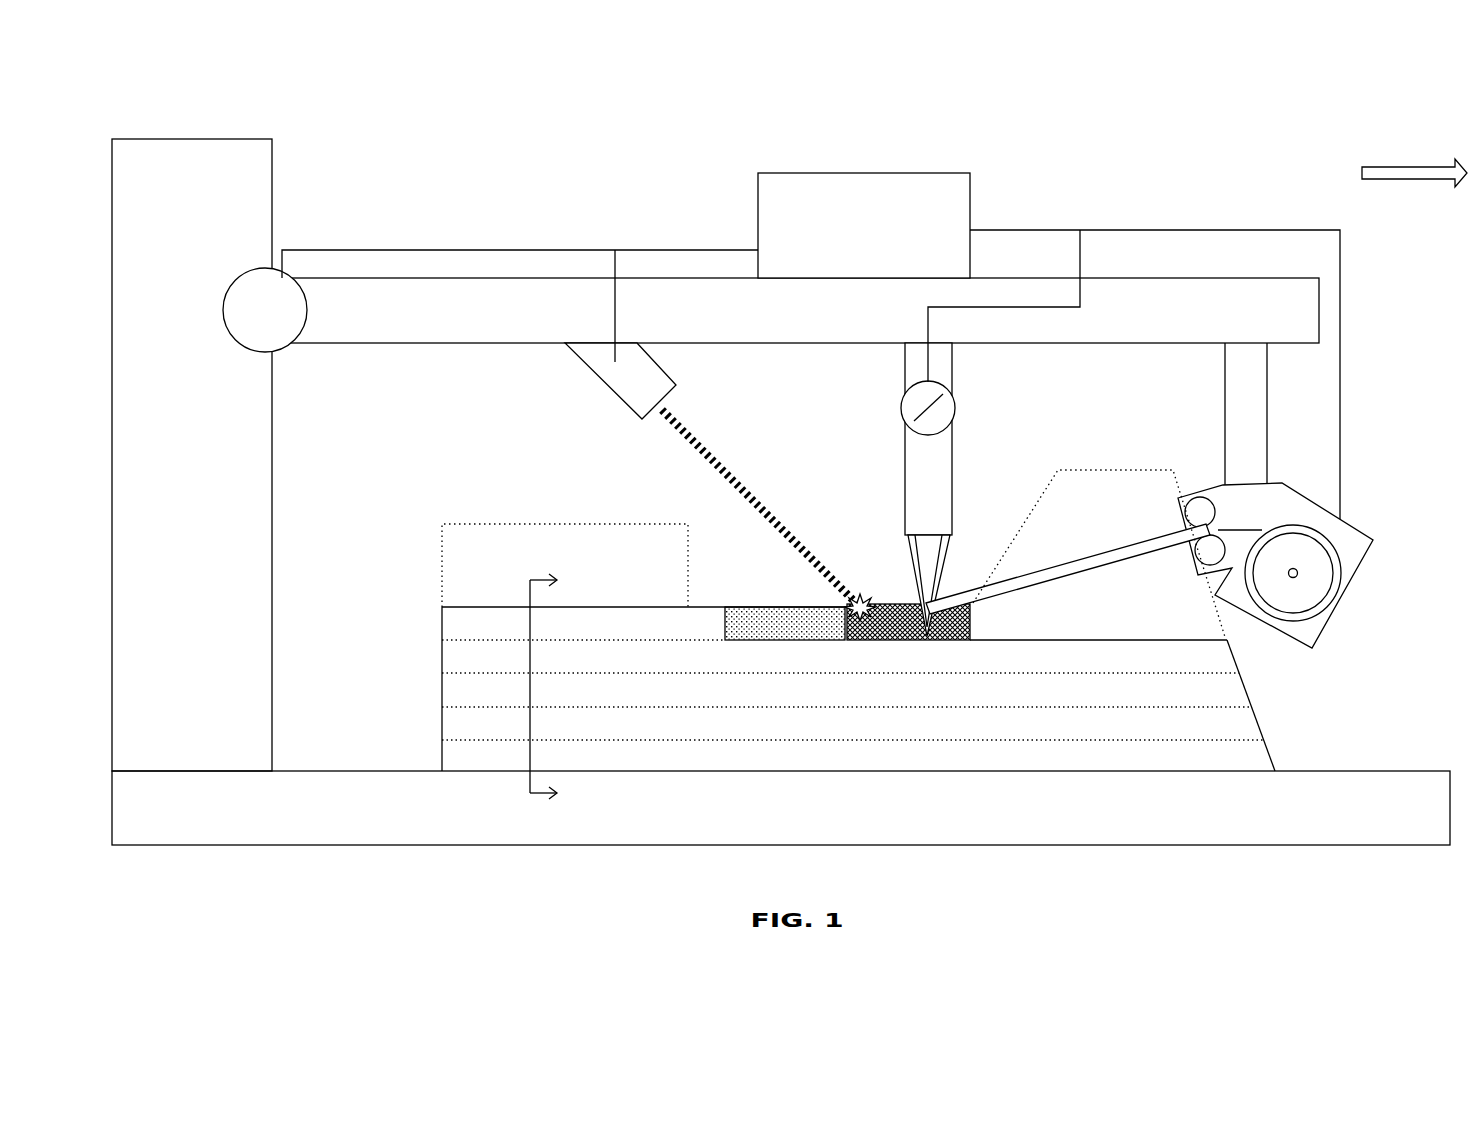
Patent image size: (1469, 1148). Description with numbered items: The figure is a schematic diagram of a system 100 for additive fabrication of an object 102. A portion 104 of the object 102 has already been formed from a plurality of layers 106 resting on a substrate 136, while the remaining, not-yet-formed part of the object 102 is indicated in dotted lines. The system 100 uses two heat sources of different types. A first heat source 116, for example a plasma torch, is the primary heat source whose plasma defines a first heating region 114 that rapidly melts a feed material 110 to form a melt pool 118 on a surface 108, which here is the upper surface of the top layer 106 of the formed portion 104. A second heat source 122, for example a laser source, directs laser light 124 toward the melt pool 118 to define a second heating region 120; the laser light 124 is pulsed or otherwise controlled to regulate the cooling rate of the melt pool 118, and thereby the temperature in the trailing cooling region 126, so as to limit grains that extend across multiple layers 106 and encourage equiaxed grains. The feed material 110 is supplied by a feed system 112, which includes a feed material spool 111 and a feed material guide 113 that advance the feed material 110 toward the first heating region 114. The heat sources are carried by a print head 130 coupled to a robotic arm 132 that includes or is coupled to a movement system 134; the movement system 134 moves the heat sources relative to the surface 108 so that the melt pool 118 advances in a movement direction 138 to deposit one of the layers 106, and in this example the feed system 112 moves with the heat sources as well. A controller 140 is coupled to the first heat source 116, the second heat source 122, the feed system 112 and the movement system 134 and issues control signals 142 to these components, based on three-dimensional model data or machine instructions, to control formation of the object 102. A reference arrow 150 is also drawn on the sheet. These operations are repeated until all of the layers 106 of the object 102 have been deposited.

The system 100 is at (161, 98).
The object 102 is at (852, 611).
The portion of the object 104 is at (1265, 698).
The layers 106 is at (425, 771).
The surface 108 is at (1010, 640).
The feed material 110 is at (1076, 560).
The feed material spool 111 is at (1335, 583).
The feed system 112 is at (1289, 495).
The feed material guide 113 is at (1186, 471).
The first heating region 114 is at (887, 589).
The first heat source 116 is at (955, 437).
The melt pool 118 is at (880, 645).
The second heating region 120 is at (846, 641).
The second heat source 122 is at (615, 399).
The laser light 124 is at (690, 425).
The cooling region 126 is at (759, 607).
The print head 130 is at (534, 208).
The robotic arm 132 is at (435, 344).
The movement system 134 is at (243, 282).
The substrate 136 is at (781, 808).
The movement direction 138 is at (1355, 167).
The controller 140 is at (864, 225).
The control signals 142 is at (1058, 208).
The reference line 150 is at (530, 763).